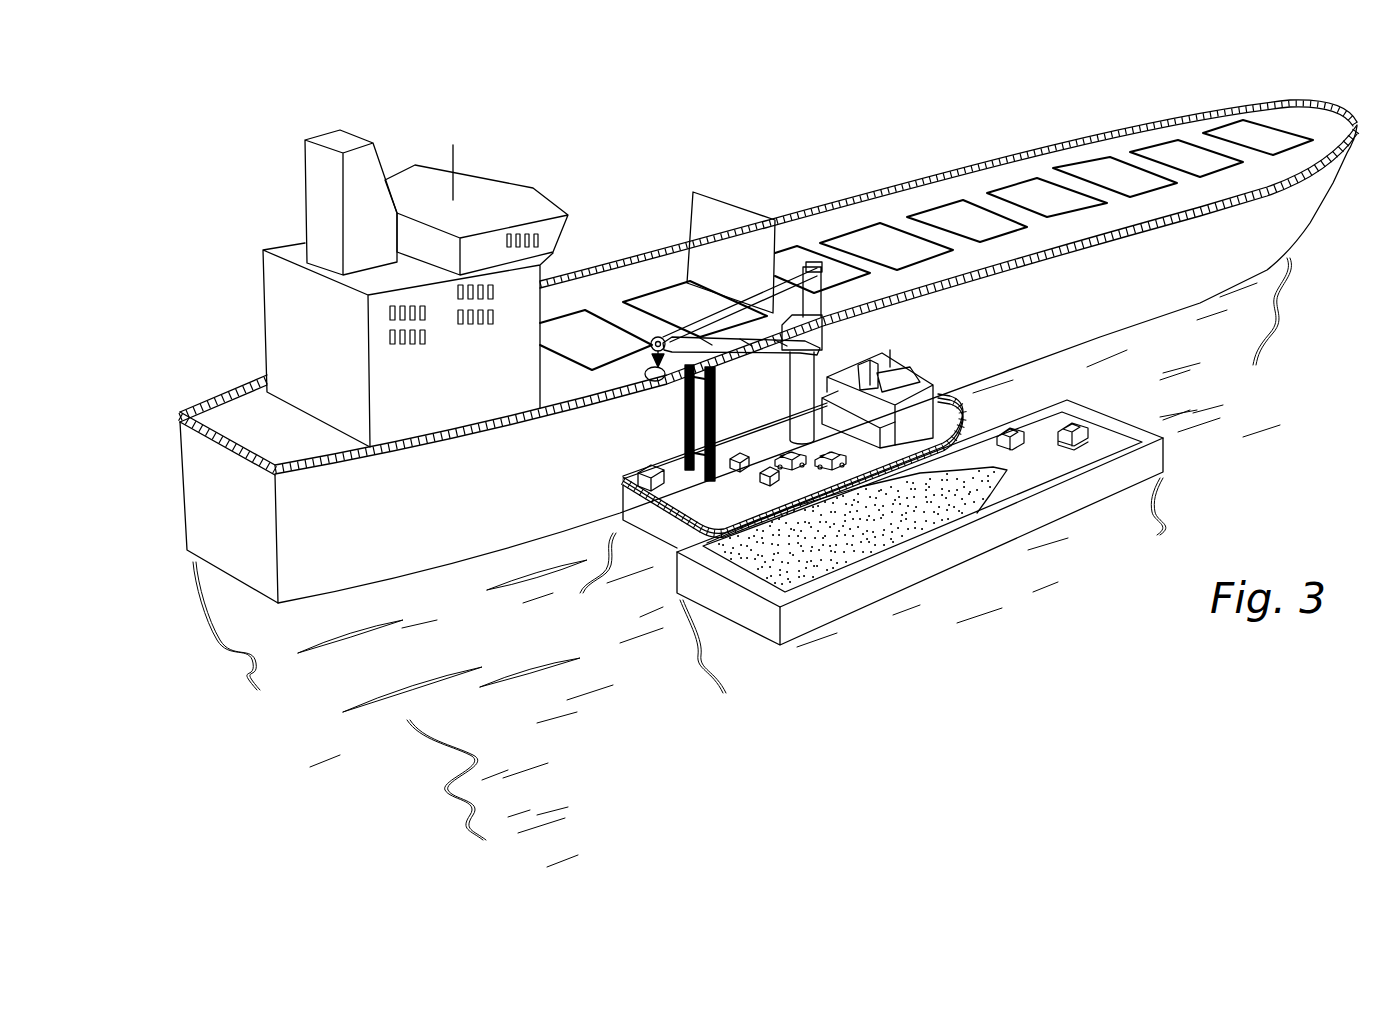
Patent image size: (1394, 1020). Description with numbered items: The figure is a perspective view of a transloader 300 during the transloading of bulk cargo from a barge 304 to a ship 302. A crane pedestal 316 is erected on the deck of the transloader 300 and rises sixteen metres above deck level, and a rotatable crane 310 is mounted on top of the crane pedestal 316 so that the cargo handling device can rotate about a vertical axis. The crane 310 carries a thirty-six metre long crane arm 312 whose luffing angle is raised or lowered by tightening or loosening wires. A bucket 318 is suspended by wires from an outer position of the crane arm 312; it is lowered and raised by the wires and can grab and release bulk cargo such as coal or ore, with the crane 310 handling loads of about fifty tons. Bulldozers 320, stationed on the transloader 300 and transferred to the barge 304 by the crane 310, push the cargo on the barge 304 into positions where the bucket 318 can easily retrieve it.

The transloader 300 is at (632, 556).
The ship 302 is at (975, 128).
The barge 304 is at (933, 597).
The crane 310 is at (742, 365).
The crane arm 312 is at (769, 352).
The crane pedestal 316 is at (800, 403).
The bucket 318 is at (657, 367).
The bulldozers 320 is at (1075, 422).